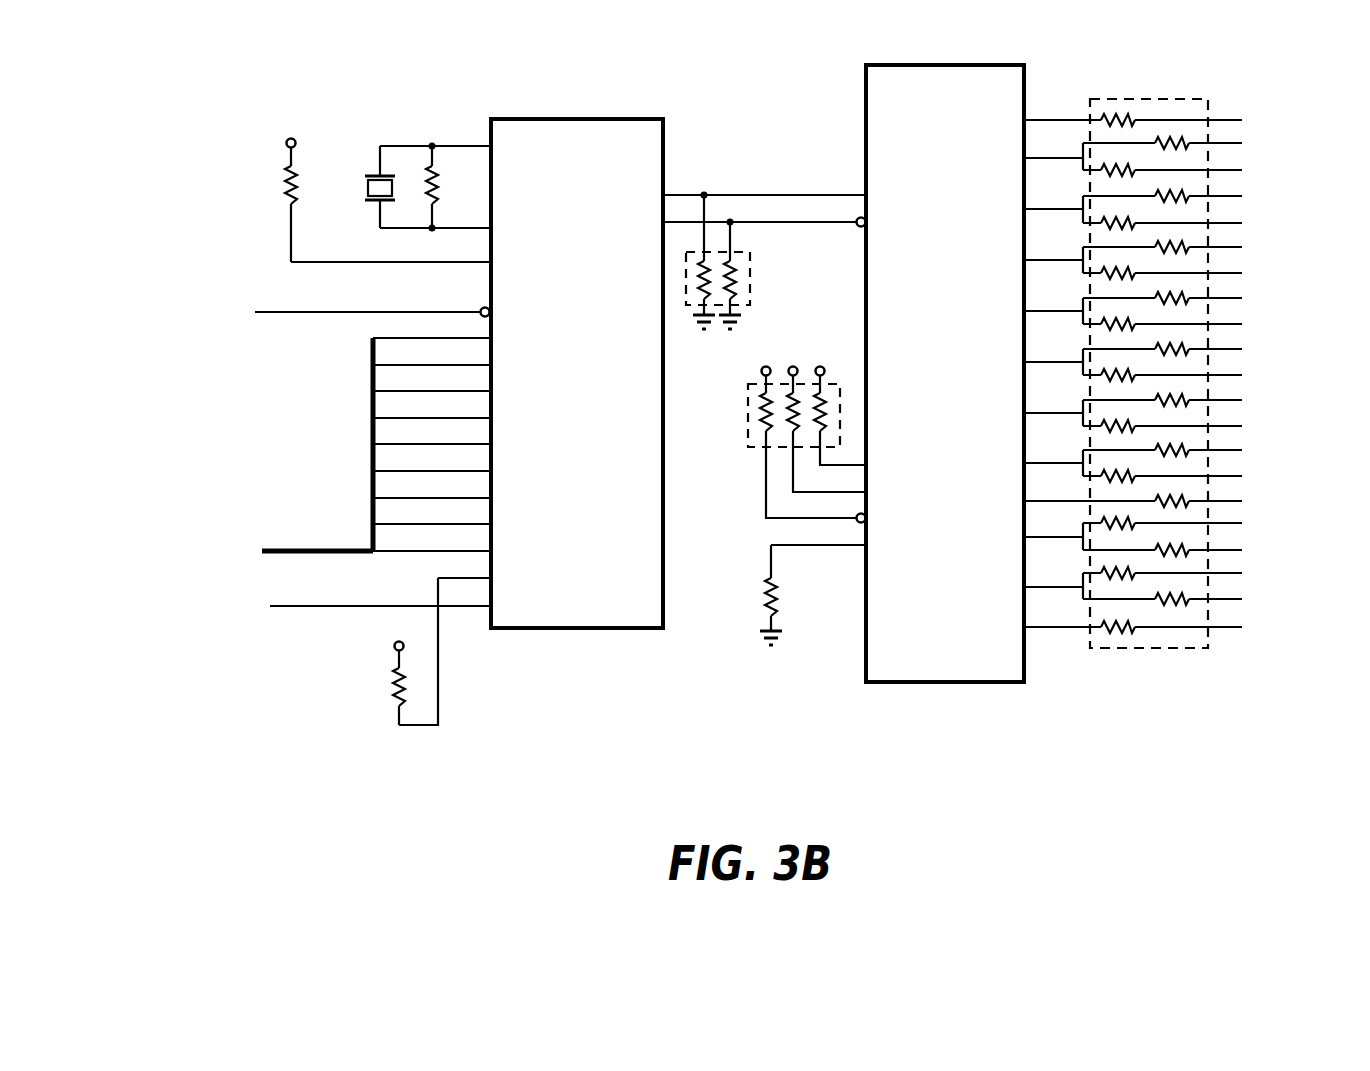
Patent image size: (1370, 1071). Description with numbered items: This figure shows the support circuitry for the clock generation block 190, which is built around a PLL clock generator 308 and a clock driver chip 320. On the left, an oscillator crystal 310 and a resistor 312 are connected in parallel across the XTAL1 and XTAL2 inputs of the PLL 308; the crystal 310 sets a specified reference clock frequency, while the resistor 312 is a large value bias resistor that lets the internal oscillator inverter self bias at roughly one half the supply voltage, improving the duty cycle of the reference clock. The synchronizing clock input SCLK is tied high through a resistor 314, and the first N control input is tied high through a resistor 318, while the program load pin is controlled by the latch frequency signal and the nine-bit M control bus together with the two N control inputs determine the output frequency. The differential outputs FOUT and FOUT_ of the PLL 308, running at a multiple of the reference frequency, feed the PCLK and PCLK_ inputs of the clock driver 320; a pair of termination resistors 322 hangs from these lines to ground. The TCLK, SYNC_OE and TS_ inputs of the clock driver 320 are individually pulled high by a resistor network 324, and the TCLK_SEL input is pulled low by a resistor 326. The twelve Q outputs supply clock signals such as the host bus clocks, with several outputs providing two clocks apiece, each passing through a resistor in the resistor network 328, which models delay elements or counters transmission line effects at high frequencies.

The clock generation block 190 is at (338, 766).
The PLL clock generator 308 is at (633, 119).
The oscillator crystal 310 is at (367, 176).
The resistor 312 is at (438, 178).
The resistor 314 is at (288, 180).
The resistor 318 is at (393, 698).
The clock driver chip 320 is at (955, 65).
The termination resistors 322 is at (753, 283).
The resistor network 324 is at (748, 418).
The resistor 326 is at (784, 597).
The resistor network 328 is at (1163, 99).